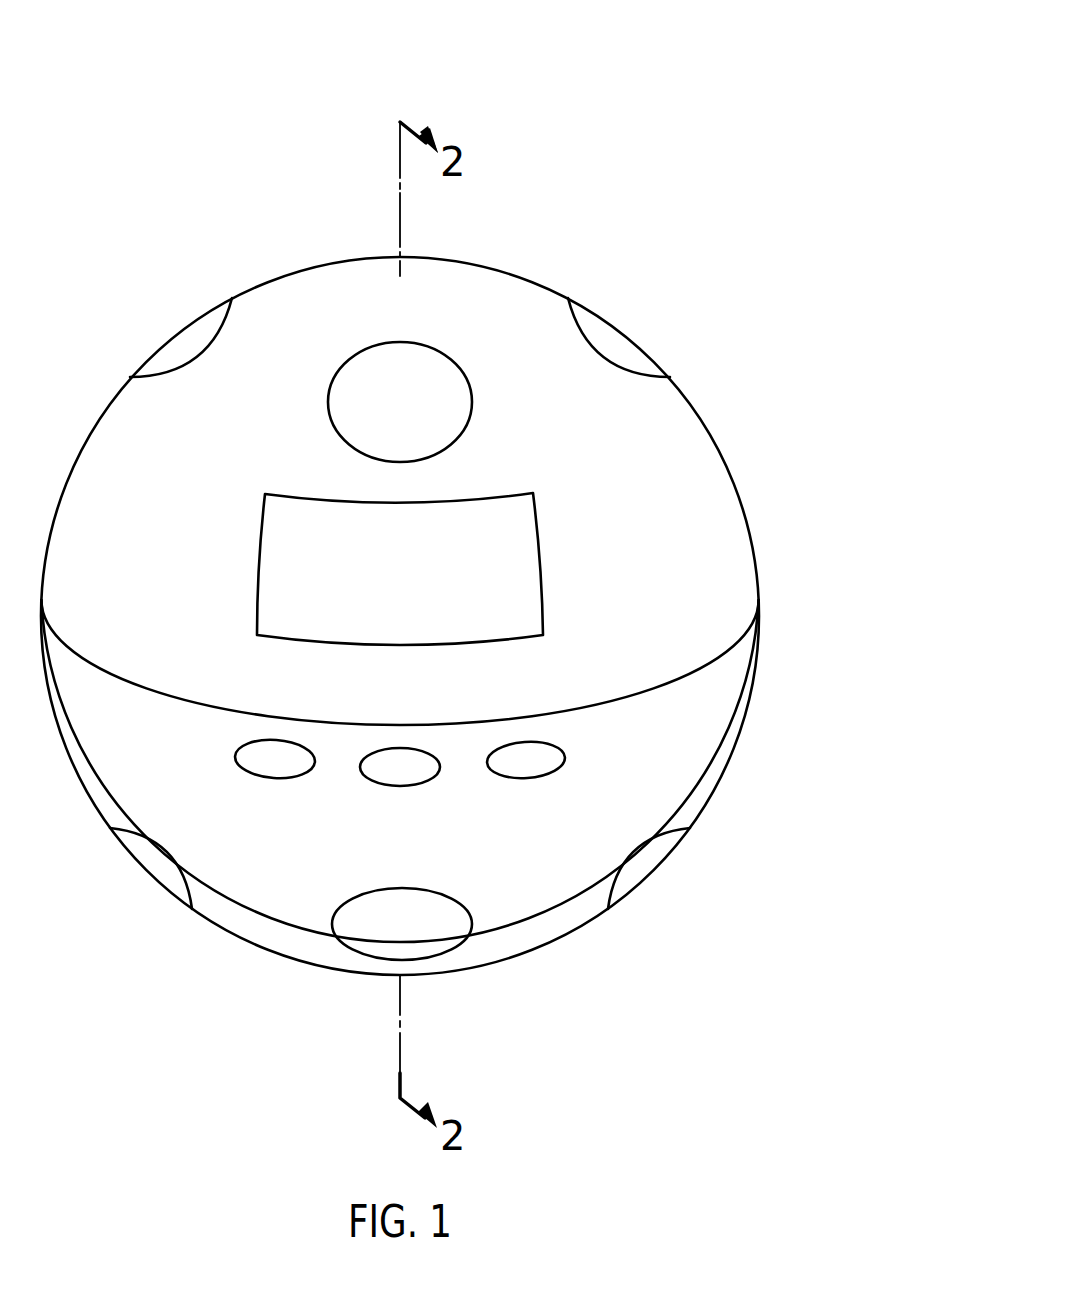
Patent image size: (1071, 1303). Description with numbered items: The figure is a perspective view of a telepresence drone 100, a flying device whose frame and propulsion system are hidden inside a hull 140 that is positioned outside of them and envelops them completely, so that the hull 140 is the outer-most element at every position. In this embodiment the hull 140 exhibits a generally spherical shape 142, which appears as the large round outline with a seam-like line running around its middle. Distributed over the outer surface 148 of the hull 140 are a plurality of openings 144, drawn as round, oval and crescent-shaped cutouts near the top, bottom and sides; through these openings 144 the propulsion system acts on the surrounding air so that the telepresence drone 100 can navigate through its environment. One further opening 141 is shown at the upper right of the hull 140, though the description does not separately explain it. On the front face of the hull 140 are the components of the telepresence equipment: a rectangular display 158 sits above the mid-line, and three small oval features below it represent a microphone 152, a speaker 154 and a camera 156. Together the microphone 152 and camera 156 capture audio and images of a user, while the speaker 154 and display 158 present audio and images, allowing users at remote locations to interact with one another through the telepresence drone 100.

The telepresence drone 100 is at (400, 501).
The hull 140 is at (538, 276).
The opening 141 is at (626, 336).
The generally spherical shape 142 is at (762, 660).
The openings 144 is at (168, 350).
The outer surface 148 is at (728, 756).
The microphone 152 is at (268, 778).
The speaker 154 is at (398, 787).
The camera 156 is at (528, 778).
The display 158 is at (542, 557).